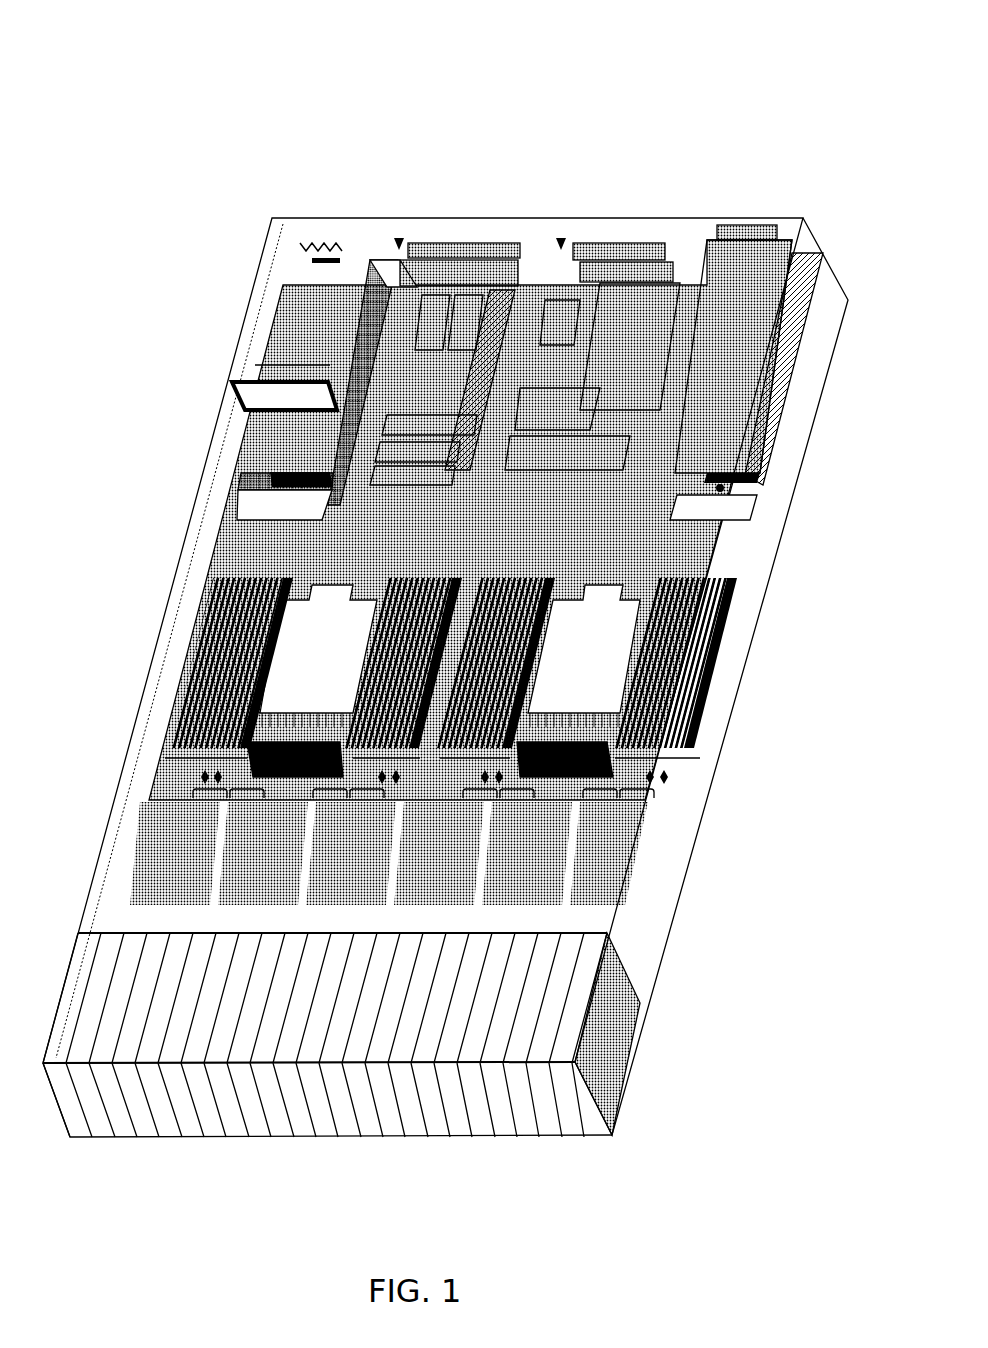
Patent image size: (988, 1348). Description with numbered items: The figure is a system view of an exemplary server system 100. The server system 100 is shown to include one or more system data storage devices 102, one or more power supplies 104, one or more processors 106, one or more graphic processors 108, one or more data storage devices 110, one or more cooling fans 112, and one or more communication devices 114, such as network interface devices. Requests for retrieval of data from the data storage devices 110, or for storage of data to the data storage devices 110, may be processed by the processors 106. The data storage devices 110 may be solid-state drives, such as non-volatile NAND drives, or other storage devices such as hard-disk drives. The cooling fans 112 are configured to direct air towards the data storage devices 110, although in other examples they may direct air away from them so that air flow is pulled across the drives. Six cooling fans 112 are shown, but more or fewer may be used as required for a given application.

The server system 100 is at (100, 50).
The system data storage devices 102 is at (227, 578).
The power supplies 104 is at (247, 433).
The processors 106 is at (338, 582).
The graphic processors 108 is at (453, 242).
The data storage devices 110 is at (155, 1156).
The cooling fans 112 is at (672, 867).
The communication devices 114 is at (603, 243).